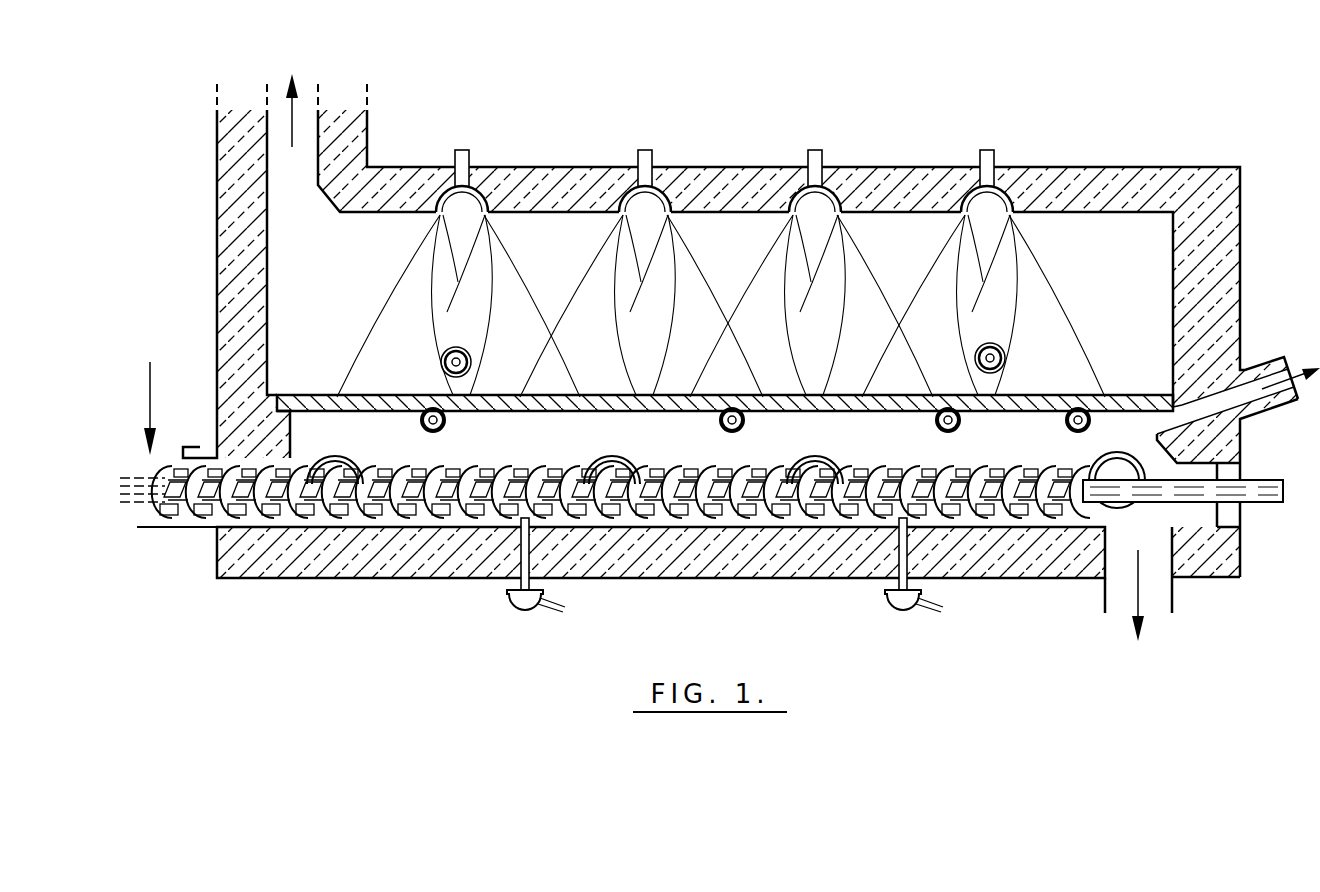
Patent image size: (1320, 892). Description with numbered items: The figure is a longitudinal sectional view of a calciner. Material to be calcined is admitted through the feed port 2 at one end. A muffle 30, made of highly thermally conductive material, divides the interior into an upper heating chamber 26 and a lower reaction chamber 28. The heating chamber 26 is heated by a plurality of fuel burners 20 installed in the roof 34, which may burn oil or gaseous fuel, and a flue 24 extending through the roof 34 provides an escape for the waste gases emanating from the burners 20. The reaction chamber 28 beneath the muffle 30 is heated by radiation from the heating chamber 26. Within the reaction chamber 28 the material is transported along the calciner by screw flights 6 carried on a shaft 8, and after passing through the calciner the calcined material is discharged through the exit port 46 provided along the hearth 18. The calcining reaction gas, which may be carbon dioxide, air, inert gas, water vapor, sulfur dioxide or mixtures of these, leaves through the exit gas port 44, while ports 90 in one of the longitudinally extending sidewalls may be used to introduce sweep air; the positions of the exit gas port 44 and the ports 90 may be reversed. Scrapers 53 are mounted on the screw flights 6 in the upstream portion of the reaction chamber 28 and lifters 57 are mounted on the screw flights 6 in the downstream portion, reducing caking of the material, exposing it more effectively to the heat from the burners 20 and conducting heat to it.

The feed port 2 is at (165, 464).
The screw flights 6 is at (1000, 471).
The shaft 8 is at (1170, 489).
The hearth 18 is at (718, 568).
The fuel burners 20 is at (469, 152).
The flue 24 is at (305, 112).
The heating chamber 26 is at (330, 306).
The reaction chamber 28 is at (688, 450).
The muffle 30 is at (546, 405).
The roof 34 is at (393, 177).
The exit gas port 44 is at (1266, 406).
The exit port 46 is at (1175, 585).
The scrapers 53 is at (452, 471).
The lifters 57 is at (858, 473).
The ports 90 is at (318, 458).